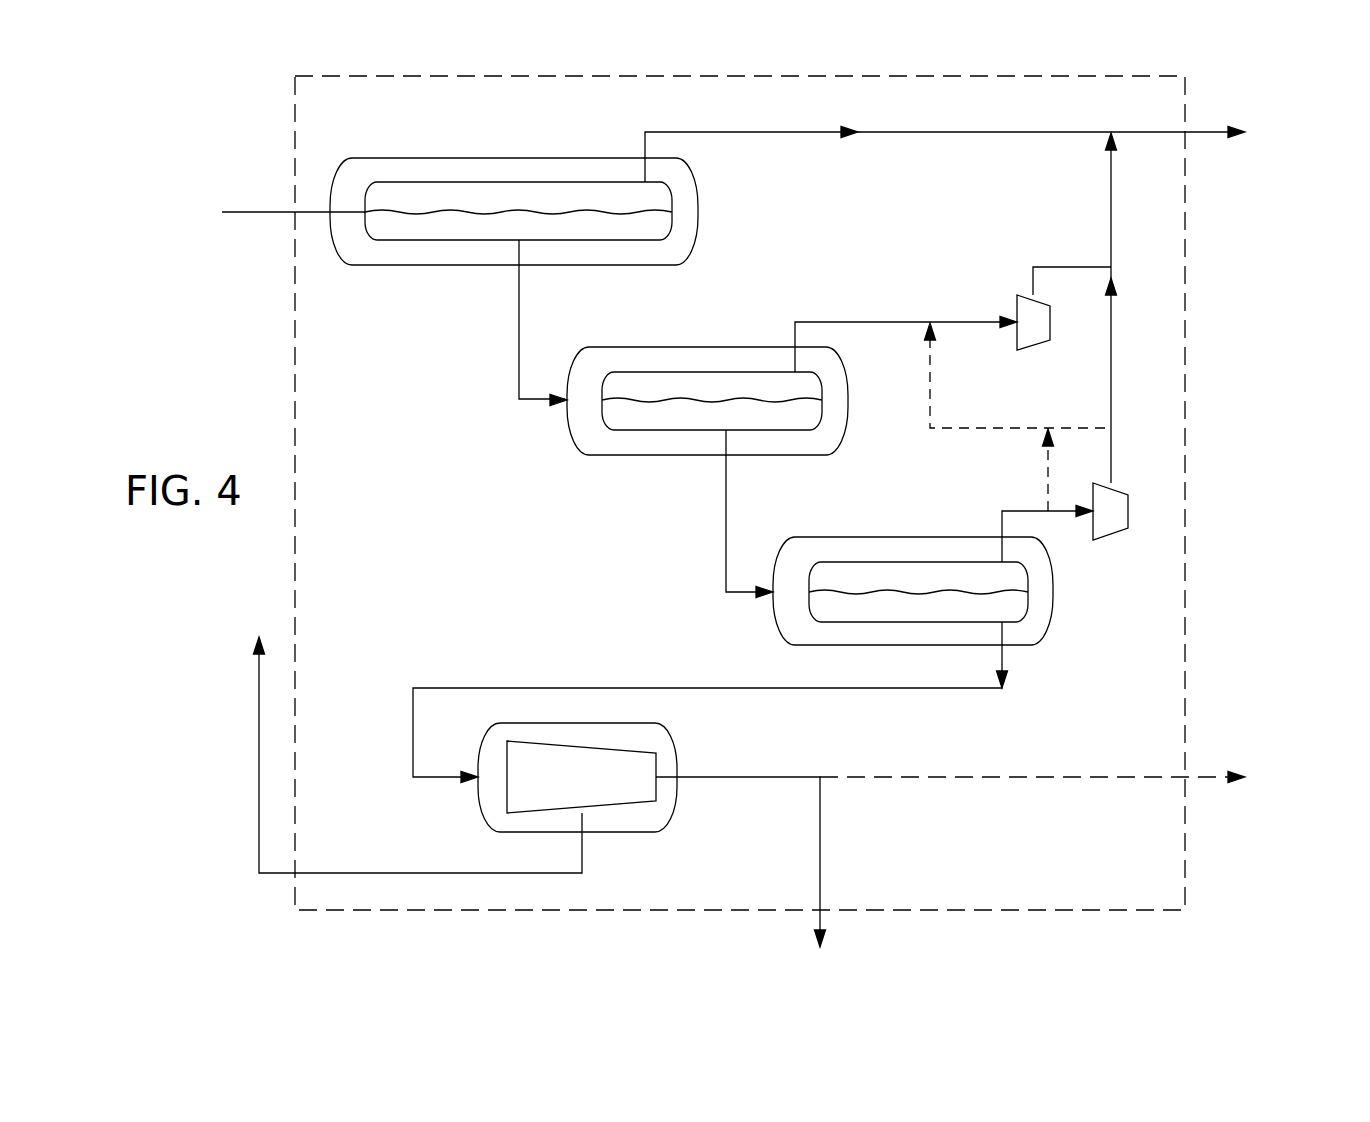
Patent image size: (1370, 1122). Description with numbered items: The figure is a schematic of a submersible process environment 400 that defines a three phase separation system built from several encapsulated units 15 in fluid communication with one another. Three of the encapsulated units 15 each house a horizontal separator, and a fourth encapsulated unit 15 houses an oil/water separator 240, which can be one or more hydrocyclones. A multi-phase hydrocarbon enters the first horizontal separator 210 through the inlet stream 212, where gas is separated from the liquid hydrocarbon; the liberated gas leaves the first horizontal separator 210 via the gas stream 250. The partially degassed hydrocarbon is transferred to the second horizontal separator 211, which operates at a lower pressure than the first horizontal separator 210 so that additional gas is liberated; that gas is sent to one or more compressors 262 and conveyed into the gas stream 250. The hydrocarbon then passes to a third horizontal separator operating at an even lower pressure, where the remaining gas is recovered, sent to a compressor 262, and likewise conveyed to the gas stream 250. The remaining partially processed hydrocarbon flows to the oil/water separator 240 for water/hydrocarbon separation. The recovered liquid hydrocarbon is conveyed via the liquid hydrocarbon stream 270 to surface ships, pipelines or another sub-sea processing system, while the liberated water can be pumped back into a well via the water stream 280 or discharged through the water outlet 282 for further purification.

The encapsulated unit 15 is at (443, 158).
The first horizontal separator 210 is at (570, 182).
The second horizontal separator 211 is at (637, 430).
The inlet stream 212 is at (247, 210).
The oil/water separator 240 is at (628, 803).
The gas stream 250 is at (1140, 135).
The compressor 262 is at (1038, 350).
The liquid hydrocarbon stream 270 is at (258, 690).
The water stream 280 is at (820, 823).
The water outlet 282 is at (877, 775).
The submersible process environment 400 is at (1250, 280).